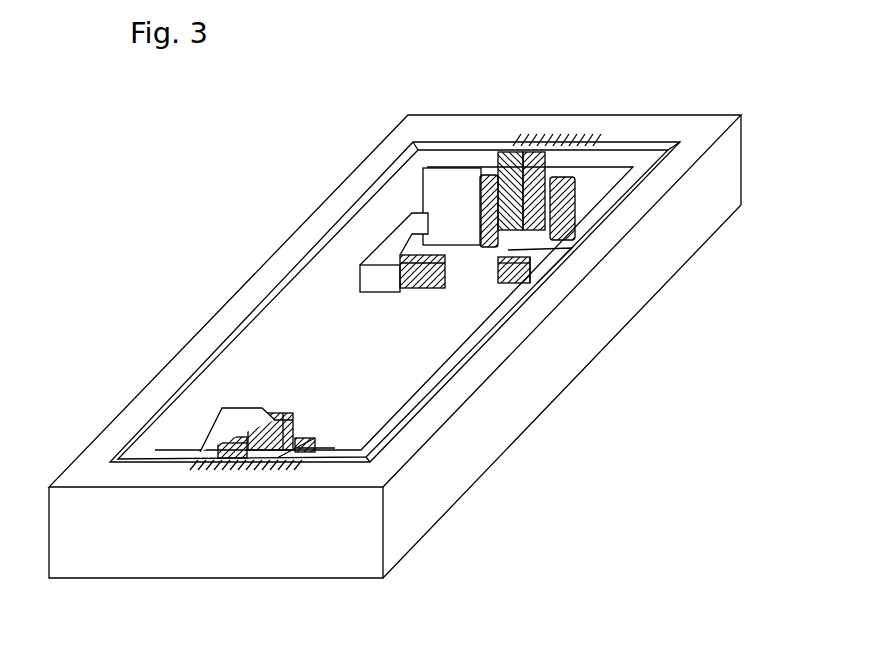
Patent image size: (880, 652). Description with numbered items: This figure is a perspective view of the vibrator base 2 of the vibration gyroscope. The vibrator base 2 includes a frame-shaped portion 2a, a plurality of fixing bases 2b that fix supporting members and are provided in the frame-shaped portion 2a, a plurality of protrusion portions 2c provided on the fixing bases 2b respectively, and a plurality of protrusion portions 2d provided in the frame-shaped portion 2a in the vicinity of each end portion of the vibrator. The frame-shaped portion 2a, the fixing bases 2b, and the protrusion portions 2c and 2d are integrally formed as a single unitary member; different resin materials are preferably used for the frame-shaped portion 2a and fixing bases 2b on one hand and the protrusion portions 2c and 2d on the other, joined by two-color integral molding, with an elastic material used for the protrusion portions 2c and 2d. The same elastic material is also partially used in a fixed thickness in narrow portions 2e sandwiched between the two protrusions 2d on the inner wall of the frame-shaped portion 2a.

The vibrator base 2 is at (430, 330).
The frame-shaped portion 2a is at (692, 206).
The fixing bases 2b is at (400, 245).
The protrusion portions 2c is at (290, 395).
The protrusion portions 2d is at (490, 175).
The narrow portions 2e is at (548, 220).